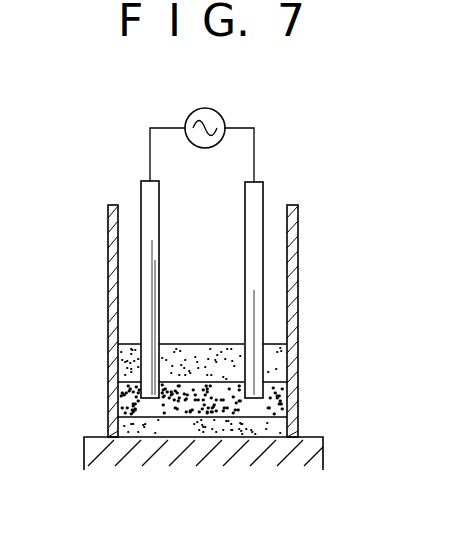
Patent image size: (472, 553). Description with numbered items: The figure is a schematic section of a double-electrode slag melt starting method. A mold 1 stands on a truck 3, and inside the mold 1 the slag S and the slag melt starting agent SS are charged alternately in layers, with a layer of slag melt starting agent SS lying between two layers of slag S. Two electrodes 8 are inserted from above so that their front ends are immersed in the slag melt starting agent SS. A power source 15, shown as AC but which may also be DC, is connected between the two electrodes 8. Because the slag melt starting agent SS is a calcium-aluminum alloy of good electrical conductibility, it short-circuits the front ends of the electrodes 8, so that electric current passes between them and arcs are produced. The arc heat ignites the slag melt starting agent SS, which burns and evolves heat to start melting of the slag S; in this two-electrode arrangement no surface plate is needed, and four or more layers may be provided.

The mold 1 is at (298, 303).
The truck 3 is at (312, 457).
The electrodes 8 is at (144, 190).
The power source 15 is at (220, 116).
The slag S is at (283, 362).
The slag melt starting agent SS is at (277, 401).